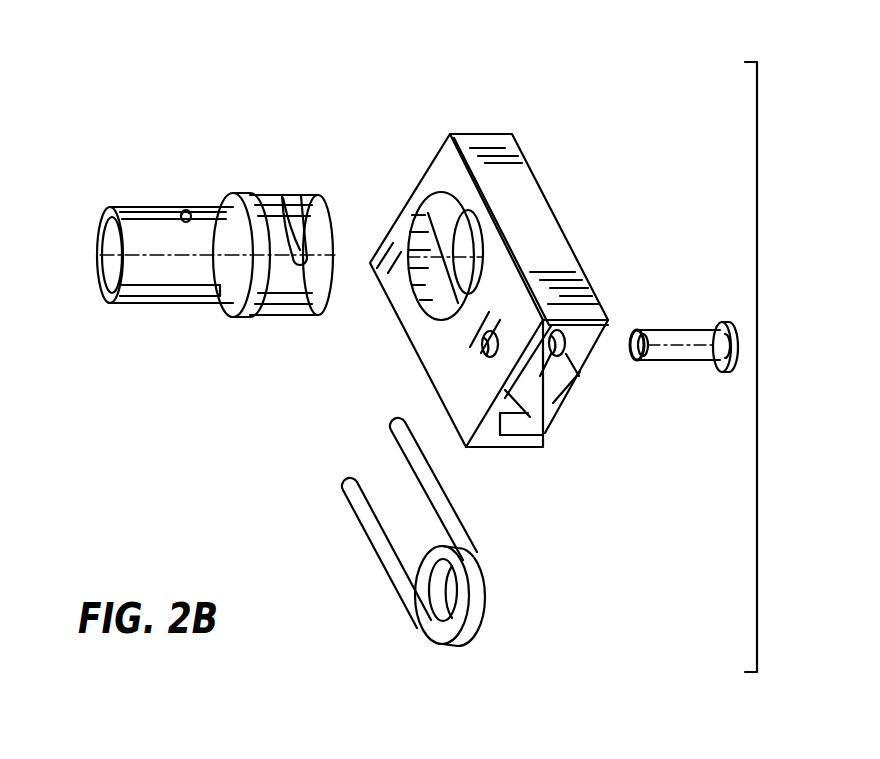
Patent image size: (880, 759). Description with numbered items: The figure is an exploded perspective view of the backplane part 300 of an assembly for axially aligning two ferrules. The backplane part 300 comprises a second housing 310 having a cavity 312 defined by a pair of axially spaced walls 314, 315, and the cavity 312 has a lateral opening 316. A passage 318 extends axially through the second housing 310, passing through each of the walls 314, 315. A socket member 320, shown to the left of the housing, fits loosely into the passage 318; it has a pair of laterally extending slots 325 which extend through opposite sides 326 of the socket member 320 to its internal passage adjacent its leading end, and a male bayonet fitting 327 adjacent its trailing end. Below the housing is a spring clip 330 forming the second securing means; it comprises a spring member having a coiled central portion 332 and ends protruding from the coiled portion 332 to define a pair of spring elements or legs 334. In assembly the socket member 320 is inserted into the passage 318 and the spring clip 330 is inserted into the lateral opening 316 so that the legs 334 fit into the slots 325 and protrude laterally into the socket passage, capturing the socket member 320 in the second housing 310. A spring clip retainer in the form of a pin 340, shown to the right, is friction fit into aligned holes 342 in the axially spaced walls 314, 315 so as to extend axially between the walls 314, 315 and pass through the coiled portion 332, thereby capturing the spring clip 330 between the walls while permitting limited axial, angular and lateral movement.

The backplane part 300 is at (388, 156).
The second housing 310 is at (541, 188).
The cavity 312 is at (557, 432).
The axially spaced wall 314 is at (515, 412).
The axially spaced wall 315 is at (545, 447).
The lateral opening 316 is at (566, 380).
The passage 318 is at (413, 288).
The socket member 320 is at (272, 318).
The laterally extending slots 325 is at (288, 193).
The opposite sides 326 is at (313, 198).
The male bayonet fitting 327 is at (187, 210).
The spring clip 330 is at (486, 568).
The coiled central portion 332 is at (487, 608).
The legs 334 is at (394, 444).
The pin 340 is at (683, 330).
The aligned holes 342 is at (481, 345).